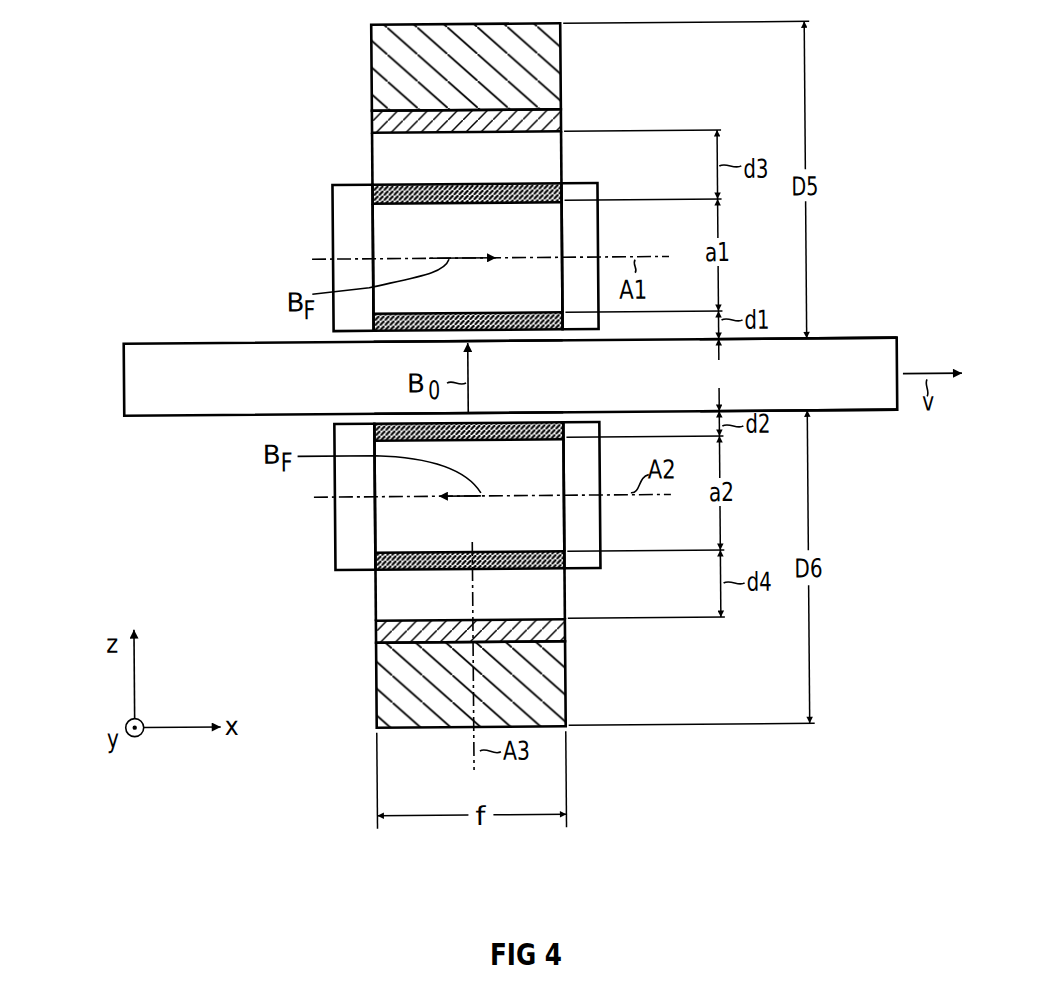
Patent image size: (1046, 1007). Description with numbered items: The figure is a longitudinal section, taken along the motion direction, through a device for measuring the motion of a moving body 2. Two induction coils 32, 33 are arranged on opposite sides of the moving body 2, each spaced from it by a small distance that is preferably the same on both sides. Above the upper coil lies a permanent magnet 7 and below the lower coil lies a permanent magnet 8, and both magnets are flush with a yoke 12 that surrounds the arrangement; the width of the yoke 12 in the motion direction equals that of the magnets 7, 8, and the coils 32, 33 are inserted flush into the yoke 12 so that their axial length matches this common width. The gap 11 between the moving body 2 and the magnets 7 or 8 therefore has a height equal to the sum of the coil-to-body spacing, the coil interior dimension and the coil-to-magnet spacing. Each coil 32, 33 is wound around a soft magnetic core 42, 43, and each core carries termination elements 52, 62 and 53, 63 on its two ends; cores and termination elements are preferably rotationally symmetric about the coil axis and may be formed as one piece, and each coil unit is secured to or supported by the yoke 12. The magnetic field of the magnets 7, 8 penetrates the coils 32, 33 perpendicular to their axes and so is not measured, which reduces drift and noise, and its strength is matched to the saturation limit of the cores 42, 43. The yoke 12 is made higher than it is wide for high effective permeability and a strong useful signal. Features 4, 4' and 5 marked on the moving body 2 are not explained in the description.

The moving body 2 is at (140, 386).
The upper tube wall 4 is at (797, 315).
The lower tube wall 4' is at (799, 432).
The measuring section of tube 5 is at (566, 381).
The permanent magnet 7 is at (566, 119).
The permanent magnet 8 is at (566, 632).
The gap 11 is at (412, 157).
The yoke 12 is at (563, 60).
The induction coil 32 is at (408, 184).
The induction coil 33 is at (412, 570).
The soft magnetic core 42 is at (400, 236).
The soft magnetic core 43 is at (400, 515).
The termination element 52 is at (348, 201).
The termination element 53 is at (352, 556).
The termination element 62 is at (590, 217).
The termination element 63 is at (590, 530).